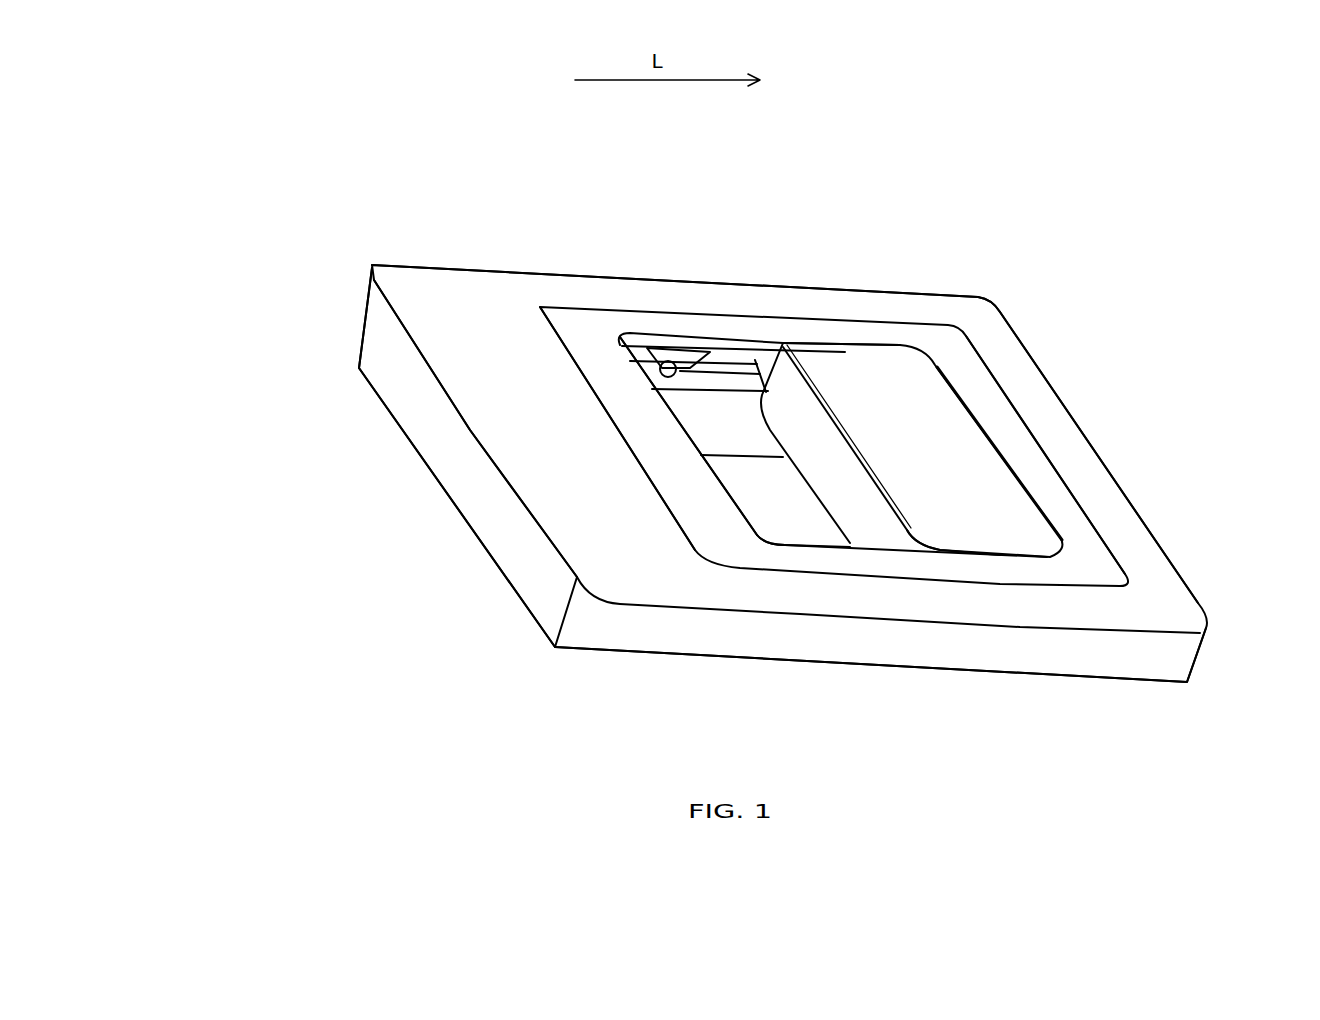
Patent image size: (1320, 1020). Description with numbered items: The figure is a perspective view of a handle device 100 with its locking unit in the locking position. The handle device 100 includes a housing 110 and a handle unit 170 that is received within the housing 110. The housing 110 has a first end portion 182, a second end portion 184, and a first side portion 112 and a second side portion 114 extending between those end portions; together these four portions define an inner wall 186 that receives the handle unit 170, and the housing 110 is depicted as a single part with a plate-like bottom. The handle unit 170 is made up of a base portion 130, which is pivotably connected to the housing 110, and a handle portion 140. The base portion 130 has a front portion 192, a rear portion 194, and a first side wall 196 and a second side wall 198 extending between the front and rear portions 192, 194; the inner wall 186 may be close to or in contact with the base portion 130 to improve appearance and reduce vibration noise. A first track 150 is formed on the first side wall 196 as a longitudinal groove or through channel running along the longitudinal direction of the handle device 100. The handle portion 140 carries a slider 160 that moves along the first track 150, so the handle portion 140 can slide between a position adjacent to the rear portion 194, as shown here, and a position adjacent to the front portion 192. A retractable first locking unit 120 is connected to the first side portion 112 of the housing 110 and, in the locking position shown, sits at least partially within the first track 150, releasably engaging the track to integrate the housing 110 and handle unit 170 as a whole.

The handle device 100 is at (258, 272).
The housing 110 is at (364, 366).
The first side portion 112 is at (728, 303).
The second side portion 114 is at (1097, 617).
The first locking unit 120 is at (668, 361).
The base portion 130 is at (933, 340).
The handle portion 140 is at (915, 396).
The first track 150 is at (687, 352).
The slider 160 is at (762, 372).
The handle unit 170 is at (560, 388).
The first end portion 182 is at (530, 433).
The second end portion 184 is at (1057, 435).
The inner wall 186 is at (820, 573).
The front portion 192 is at (657, 435).
The rear portion 194 is at (1037, 477).
The first side wall 196 is at (833, 332).
The second side wall 198 is at (873, 548).